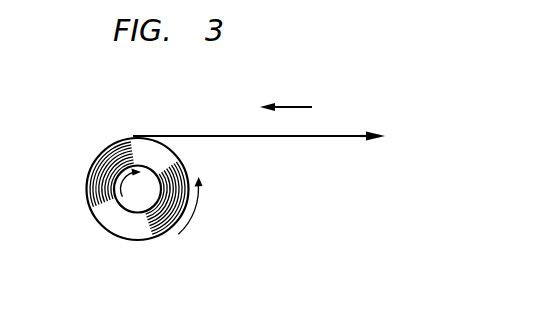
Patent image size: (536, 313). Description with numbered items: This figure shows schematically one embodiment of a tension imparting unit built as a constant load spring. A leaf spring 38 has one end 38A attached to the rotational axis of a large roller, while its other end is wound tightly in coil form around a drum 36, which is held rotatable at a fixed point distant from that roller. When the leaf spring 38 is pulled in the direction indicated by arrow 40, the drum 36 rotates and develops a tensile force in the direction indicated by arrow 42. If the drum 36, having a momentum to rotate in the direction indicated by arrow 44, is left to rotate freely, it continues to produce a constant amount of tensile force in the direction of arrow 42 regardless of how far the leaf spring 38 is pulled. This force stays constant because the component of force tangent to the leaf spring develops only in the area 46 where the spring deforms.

The drum 36 is at (135, 200).
The leaf spring 38 is at (242, 137).
The end of leaf spring 38A is at (318, 137).
The arrow 40 is at (367, 139).
The arrow 42 is at (292, 103).
The arrow 44 is at (193, 213).
The area 46 is at (108, 145).